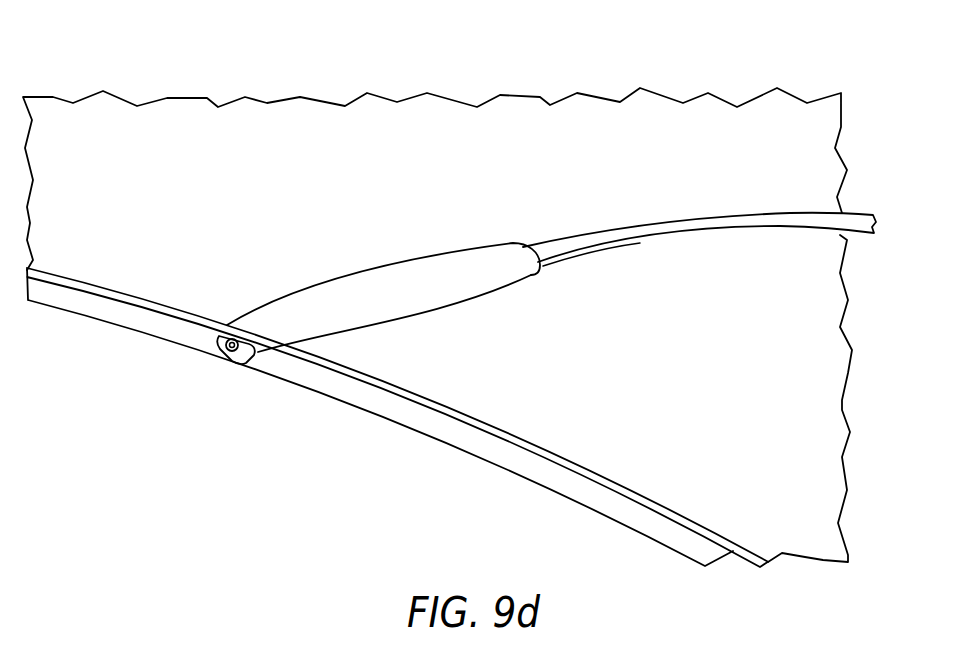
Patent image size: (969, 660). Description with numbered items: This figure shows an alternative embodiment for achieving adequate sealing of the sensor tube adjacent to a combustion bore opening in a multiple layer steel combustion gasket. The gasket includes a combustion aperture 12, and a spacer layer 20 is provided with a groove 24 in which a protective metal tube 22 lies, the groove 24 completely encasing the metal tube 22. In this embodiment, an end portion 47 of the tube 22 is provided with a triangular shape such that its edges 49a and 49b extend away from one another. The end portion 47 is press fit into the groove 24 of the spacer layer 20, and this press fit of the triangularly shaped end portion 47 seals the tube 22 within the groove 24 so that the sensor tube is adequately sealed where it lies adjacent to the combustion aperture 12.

The combustion aperture 12 is at (140, 320).
The spacer layer 20 is at (203, 177).
The protective metal tube 22 is at (853, 217).
The groove 24 is at (640, 243).
The end portion 47 is at (252, 360).
The edge 49a is at (343, 277).
The edge 49b is at (425, 315).